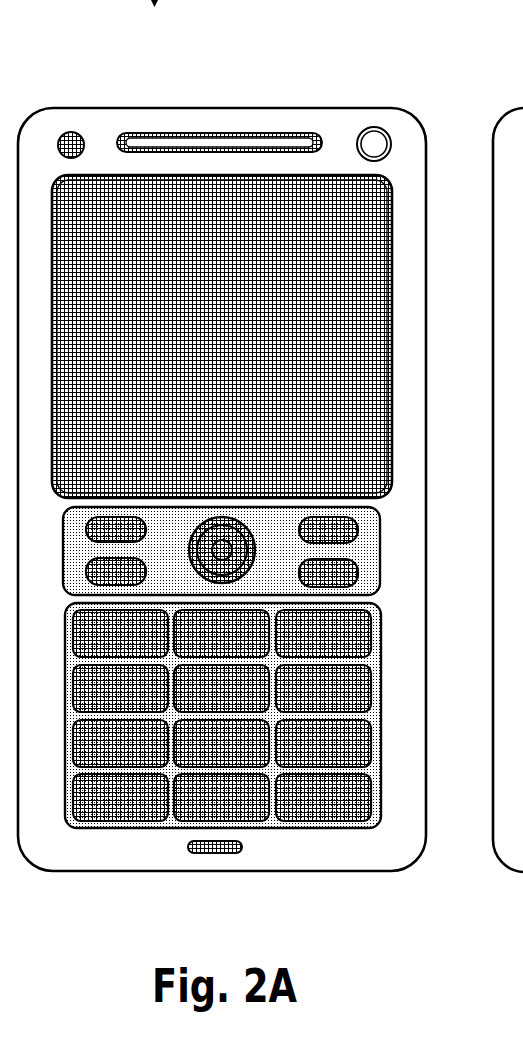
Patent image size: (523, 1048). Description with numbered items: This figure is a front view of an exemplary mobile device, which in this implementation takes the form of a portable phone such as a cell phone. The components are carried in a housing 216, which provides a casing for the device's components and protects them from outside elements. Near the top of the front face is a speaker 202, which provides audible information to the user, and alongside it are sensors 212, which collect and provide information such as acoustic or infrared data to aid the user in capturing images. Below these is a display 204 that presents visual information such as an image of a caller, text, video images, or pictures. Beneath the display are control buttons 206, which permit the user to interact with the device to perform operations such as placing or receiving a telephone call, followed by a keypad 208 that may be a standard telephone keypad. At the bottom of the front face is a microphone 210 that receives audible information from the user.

The speaker 202 is at (201, 133).
The display 204 is at (338, 175).
The control buttons 206 is at (380, 551).
The keypad 208 is at (343, 716).
The microphone 210 is at (242, 847).
The sensors 212 is at (375, 145).
The housing 216 is at (352, 872).